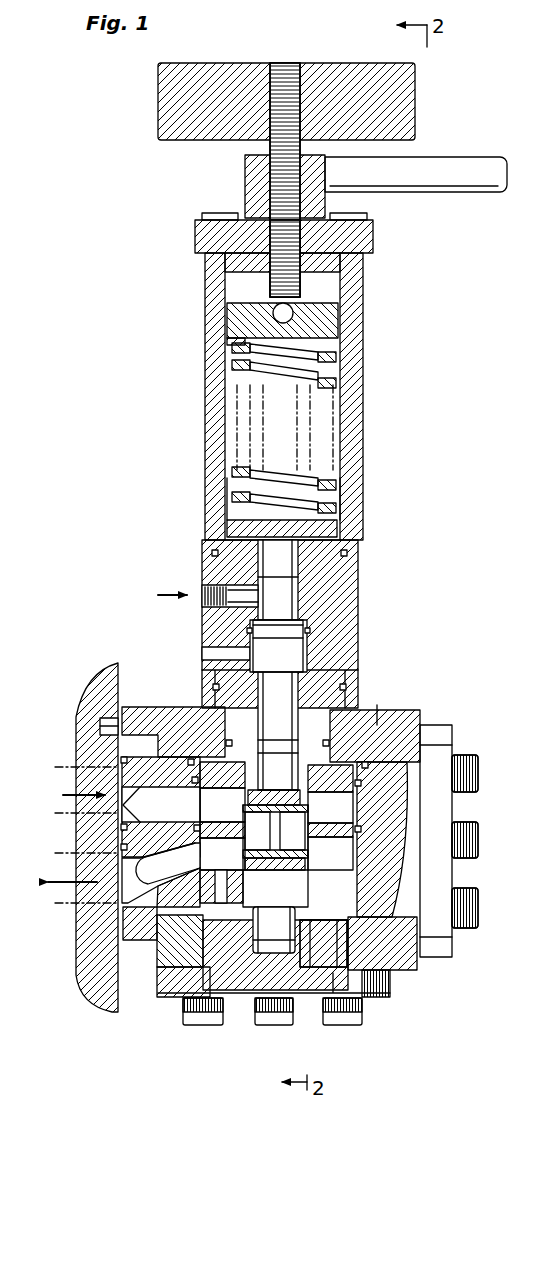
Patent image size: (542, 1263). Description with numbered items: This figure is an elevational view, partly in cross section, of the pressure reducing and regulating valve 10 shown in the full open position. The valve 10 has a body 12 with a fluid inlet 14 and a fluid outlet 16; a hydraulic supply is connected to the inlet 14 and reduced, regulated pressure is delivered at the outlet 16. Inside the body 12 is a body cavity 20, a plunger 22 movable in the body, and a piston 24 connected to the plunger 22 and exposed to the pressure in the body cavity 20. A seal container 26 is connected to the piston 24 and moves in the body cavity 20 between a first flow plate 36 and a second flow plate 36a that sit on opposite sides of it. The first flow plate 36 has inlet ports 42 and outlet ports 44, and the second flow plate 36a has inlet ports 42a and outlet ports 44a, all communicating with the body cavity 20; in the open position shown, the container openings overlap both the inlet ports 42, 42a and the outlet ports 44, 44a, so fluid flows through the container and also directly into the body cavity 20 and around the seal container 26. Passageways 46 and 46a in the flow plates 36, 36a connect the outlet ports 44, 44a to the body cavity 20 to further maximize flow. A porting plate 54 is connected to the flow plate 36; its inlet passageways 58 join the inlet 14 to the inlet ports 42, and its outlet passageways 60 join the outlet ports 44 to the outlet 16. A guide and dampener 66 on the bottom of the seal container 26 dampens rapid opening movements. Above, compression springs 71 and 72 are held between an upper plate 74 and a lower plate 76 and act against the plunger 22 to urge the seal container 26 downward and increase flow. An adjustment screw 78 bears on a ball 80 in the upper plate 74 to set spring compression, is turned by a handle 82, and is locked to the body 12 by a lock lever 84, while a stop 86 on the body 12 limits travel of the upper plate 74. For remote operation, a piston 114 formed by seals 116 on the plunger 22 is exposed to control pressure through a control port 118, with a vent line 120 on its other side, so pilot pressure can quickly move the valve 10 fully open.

The pressure reducing and regulating valve 10 is at (367, 380).
The body 12 is at (407, 713).
The fluid inlet 14 is at (117, 783).
The fluid outlet 16 is at (122, 893).
The body cavity 20 is at (350, 753).
The plunger 22 is at (292, 693).
The piston 24 is at (220, 678).
The seal container 26 is at (227, 720).
The first flow plate 36 is at (167, 995).
The second flow plate 36a is at (387, 998).
The first and second inlet ports 42 is at (228, 815).
The inlet ports of second flow plate 42a is at (343, 808).
The first and second outlet ports 44 is at (226, 868).
The outlet ports of second flow plate 44a is at (340, 858).
The passageway 46 is at (198, 1025).
The passageway 46a is at (350, 960).
The porting plate 54 is at (118, 950).
The first and second inlet passageways 58 is at (155, 808).
The first and second outlet passageways 60 is at (160, 883).
The guide and dampener 66 is at (315, 975).
The compression spring 71 is at (332, 357).
The compression spring 72 is at (297, 478).
The upper plate 74 is at (333, 313).
The lower plate 76 is at (337, 528).
The adjustment screw 78 is at (273, 190).
The ball 80 is at (272, 315).
The handle 82 is at (402, 93).
The lock lever 84 is at (478, 167).
The stop 86 is at (223, 337).
The piston 114 is at (307, 645).
The seals 116 is at (312, 630).
The control port 118 is at (205, 590).
The vent line 120 is at (202, 650).